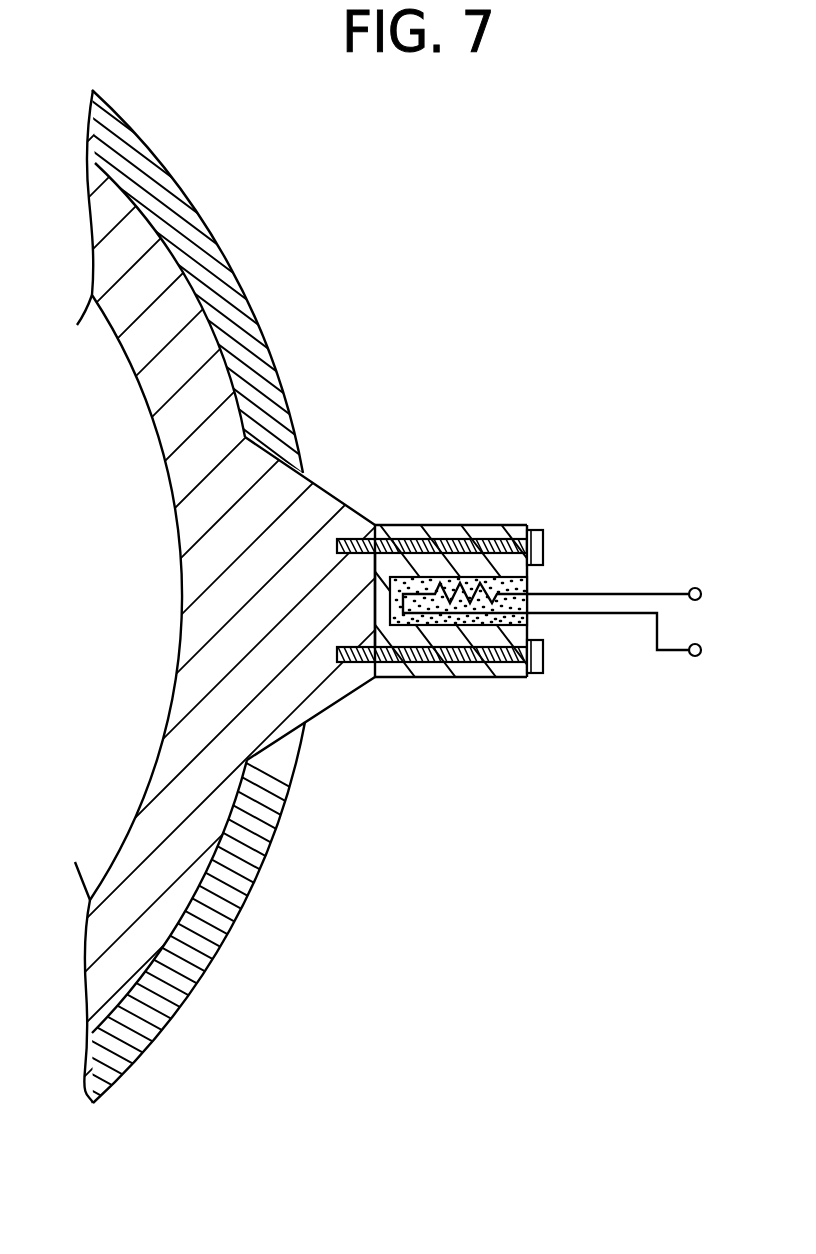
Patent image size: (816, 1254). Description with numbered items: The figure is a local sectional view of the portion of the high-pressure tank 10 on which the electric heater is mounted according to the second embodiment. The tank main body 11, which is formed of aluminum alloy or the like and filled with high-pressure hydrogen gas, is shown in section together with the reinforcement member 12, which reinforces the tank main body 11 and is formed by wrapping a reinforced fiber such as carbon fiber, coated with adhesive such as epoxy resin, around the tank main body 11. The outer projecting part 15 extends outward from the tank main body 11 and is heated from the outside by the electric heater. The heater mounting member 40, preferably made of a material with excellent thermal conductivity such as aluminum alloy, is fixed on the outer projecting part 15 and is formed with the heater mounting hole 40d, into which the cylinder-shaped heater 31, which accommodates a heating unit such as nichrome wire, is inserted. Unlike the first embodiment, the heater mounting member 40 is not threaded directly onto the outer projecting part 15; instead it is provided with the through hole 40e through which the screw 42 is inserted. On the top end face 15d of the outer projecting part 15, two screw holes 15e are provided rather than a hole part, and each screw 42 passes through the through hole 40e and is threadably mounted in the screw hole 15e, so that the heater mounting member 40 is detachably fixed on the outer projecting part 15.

The high-pressure tank 10 is at (240, 146).
The tank main body 11 is at (155, 385).
The reinforcement member 12 is at (218, 262).
The outer projecting part 15 is at (323, 507).
The top end face 15d is at (392, 664).
The screw hole 15e is at (358, 540).
The heater 31 is at (530, 622).
The heater mounting member 40 is at (480, 596).
The heater mounting hole 40d is at (503, 578).
The through hole 40e is at (505, 525).
The screw 42 is at (540, 547).